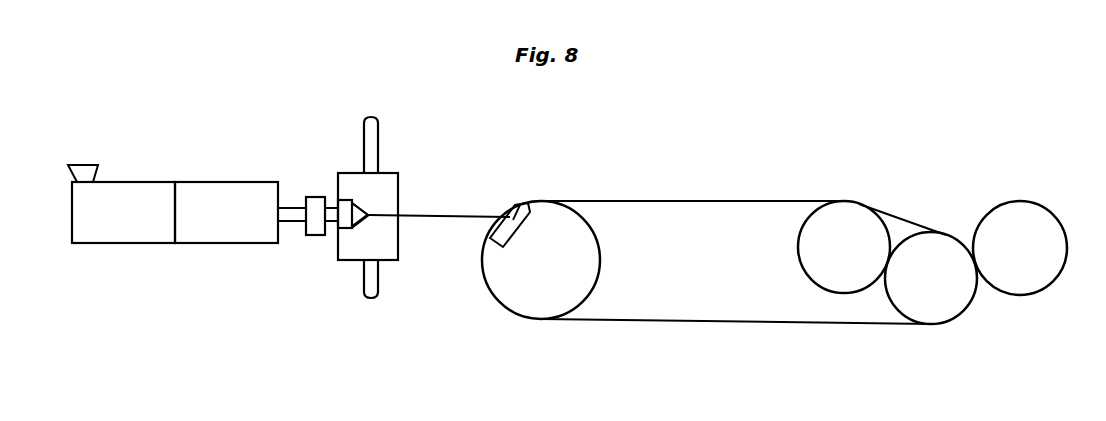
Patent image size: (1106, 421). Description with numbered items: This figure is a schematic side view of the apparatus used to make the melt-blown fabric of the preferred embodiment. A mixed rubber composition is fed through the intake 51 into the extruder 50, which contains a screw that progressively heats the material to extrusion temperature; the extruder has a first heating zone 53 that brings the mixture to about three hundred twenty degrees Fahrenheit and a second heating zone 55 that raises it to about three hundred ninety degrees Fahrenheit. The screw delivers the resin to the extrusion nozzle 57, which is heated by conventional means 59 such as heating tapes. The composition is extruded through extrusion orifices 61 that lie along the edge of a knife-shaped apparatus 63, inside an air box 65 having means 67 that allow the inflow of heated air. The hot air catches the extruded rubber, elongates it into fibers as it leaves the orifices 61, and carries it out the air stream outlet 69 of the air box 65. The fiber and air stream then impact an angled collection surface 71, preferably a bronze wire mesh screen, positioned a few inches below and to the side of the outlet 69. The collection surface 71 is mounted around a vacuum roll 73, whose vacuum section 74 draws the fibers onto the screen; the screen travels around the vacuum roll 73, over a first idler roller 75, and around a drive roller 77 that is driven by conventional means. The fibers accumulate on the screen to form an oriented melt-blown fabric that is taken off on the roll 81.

The extruder 50 is at (227, 276).
The intake 51 is at (98, 170).
The first heating zone 53 is at (117, 244).
The second heating zone 55 is at (222, 244).
The extrusion nozzle 57 is at (345, 229).
The heating means 59 is at (315, 197).
The extrusion orifices 61 is at (368, 214).
The knife-shaped apparatus 63 is at (363, 212).
The air box 65 is at (392, 262).
The heated air inflow means 67 is at (373, 118).
The air stream outlet 69 is at (399, 216).
The collection surface 71 is at (508, 212).
The vacuum roll 73 is at (525, 297).
The vacuum section 74 is at (514, 219).
The first idler roller 75 is at (847, 213).
The drive roller 77 is at (958, 298).
The take-off roll 81 is at (1040, 230).